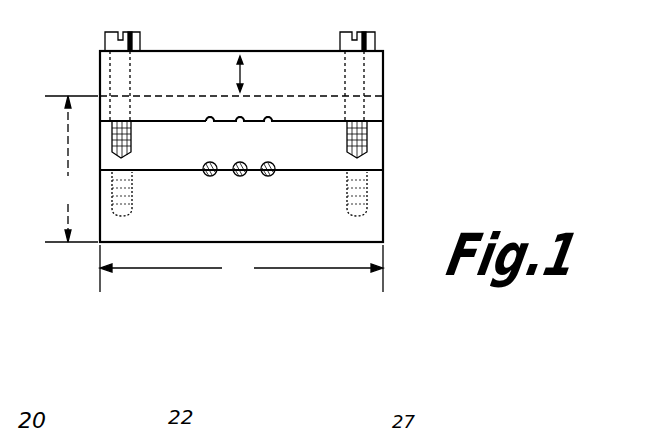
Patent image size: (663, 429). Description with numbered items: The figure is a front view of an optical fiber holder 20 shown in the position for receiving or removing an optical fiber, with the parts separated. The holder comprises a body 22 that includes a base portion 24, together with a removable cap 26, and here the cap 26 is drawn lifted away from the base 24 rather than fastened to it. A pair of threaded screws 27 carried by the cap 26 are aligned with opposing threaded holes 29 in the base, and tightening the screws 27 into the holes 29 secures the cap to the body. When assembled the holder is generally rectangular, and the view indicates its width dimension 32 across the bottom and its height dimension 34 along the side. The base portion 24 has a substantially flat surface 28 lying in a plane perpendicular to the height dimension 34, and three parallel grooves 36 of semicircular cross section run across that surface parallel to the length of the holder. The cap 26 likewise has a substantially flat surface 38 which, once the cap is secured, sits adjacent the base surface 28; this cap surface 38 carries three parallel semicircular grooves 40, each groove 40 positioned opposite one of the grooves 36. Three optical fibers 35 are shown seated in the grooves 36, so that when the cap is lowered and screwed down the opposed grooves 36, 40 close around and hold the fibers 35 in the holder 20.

The optical fiber holder 20 is at (46, 65).
The body 22 is at (385, 152).
The base portion 24 is at (385, 233).
The removable cap 26 is at (190, 51).
The threaded screws 27 is at (106, 40).
The base surface 28 is at (316, 170).
The threaded holes 29 is at (128, 195).
The width dimension 32 is at (241, 268).
The height dimension 34 is at (71, 169).
The optical fibers 35 is at (266, 162).
The grooves 36 is at (268, 177).
The cap surface 38 is at (178, 122).
The grooves 40 is at (209, 117).